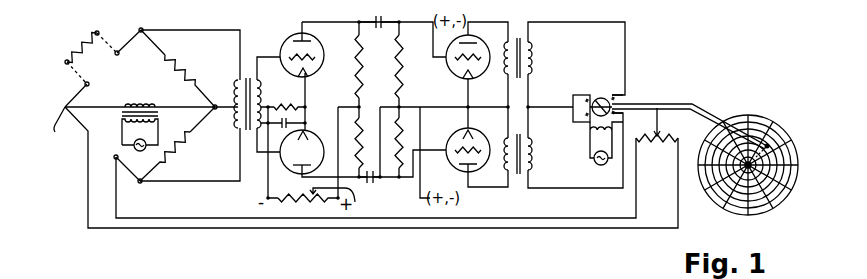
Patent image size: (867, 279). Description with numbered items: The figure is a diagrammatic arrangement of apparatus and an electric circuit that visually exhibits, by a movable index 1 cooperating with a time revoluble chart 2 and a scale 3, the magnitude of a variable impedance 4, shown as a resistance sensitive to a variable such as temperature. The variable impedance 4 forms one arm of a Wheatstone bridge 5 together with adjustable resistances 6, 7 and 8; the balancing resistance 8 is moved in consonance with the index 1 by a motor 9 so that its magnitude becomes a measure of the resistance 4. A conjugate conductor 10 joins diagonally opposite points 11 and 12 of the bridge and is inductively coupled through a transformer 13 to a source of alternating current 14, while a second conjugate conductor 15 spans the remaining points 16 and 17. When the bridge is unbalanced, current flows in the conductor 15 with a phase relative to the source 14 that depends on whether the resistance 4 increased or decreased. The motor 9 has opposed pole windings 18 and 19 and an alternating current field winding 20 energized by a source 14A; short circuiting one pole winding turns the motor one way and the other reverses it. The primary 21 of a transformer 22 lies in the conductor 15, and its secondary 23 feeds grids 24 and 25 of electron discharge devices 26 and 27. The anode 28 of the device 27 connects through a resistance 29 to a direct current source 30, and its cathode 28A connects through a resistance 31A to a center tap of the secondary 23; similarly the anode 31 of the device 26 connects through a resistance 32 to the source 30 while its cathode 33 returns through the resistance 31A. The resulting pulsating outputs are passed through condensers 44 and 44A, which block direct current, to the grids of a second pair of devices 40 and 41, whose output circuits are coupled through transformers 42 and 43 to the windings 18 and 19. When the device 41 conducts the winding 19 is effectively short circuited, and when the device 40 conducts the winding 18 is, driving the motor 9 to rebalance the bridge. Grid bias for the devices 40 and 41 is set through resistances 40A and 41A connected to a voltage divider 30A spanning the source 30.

The movable index 1 is at (712, 112).
The time revoluble chart 2 is at (776, 208).
The scale 3 is at (770, 142).
The variable impedance 4 is at (64, 34).
The Wheatstone bridge 5 is at (133, 87).
The adjustable resistance 6 is at (191, 76).
The adjustable resistance 7 is at (190, 141).
The balancing resistance 8 is at (648, 143).
The motor 9 is at (605, 97).
The conjugate conductor 10 is at (189, 108).
The bridge point 11 is at (63, 133).
The bridge point 12 is at (218, 94).
The transformer 13 is at (118, 114).
The source of alternating current 14 is at (121, 147).
The source 14A is at (596, 163).
The second conjugate conductor 15 is at (240, 56).
The bridge point 16 is at (147, 28).
The bridge point 17 is at (141, 185).
The pole winding 18 is at (580, 95).
The pole winding 19 is at (623, 99).
The alternating current field winding 20 is at (591, 128).
The primary 21 is at (236, 118).
The transformer 22 is at (247, 134).
The secondary 23 is at (263, 92).
The grid 24 is at (311, 140).
The grid 25 is at (315, 47).
The electron discharge device 26 is at (293, 166).
The electron discharge device 27 is at (287, 52).
The anode 28 is at (300, 29).
The cathode 28A is at (311, 73).
The resistance 29 is at (372, 66).
The direct current source 30 is at (338, 200).
The voltage divider 30A is at (345, 202).
The anode 31 is at (297, 169).
The resistance 31A is at (301, 103).
The resistance 32 is at (364, 118).
The cathode 33 is at (310, 121).
The electron discharge device 40 is at (471, 128).
The resistance 40A is at (404, 138).
The electron discharge device 41 is at (471, 80).
The resistance 41A is at (404, 72).
The transformer 42 is at (518, 180).
The transformer 43 is at (531, 33).
The condenser 44 is at (370, 28).
The condenser 44A is at (375, 182).